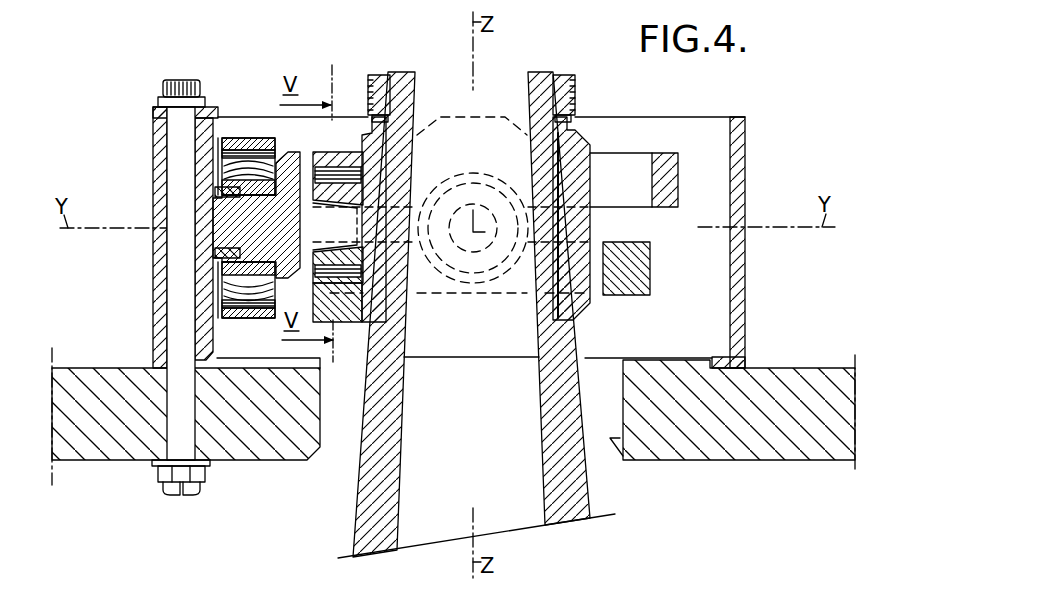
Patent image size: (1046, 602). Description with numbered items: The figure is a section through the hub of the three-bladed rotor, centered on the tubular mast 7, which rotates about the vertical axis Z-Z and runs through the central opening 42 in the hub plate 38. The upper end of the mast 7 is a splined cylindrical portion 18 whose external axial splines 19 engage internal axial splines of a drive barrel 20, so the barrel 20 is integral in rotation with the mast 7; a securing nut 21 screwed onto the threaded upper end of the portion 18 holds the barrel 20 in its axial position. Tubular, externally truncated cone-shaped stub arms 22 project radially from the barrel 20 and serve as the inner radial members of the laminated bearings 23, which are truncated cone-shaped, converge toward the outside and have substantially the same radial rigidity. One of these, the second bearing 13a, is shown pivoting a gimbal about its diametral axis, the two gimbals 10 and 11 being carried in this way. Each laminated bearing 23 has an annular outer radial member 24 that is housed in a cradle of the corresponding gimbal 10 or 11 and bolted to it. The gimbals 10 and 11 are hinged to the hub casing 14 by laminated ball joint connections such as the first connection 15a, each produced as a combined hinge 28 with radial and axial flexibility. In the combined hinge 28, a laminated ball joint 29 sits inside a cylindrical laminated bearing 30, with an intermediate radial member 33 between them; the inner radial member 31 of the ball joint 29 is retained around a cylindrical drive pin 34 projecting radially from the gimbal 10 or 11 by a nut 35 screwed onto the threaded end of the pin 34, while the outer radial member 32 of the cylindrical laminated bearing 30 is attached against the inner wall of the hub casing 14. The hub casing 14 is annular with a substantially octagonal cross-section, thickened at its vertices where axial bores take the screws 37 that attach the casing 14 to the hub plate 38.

The mast 7 is at (368, 527).
The gimbal 10 is at (665, 180).
The gimbal 11 is at (637, 255).
The second bearing 13a is at (349, 289).
The hub casing 14 is at (737, 152).
The first laminated ball joint connection 15a is at (240, 315).
The splined cylindrical portion 18 is at (403, 107).
The external axial splines 19 is at (558, 175).
The drive barrel 20 is at (578, 273).
The securing nut 21 is at (564, 88).
The stub arm 22 is at (336, 185).
The laminated bearing 23 is at (348, 165).
The outer radial member 24 is at (315, 167).
The combined hinge 28 is at (208, 199).
The laminated ball joint 29 is at (230, 170).
The cylindrical laminated bearing 30 is at (222, 168).
The inner radial member 31 is at (220, 263).
The outer radial member 32 is at (245, 140).
The intermediate radial member 33 is at (224, 165).
The drive pin 34 is at (222, 233).
The nut 35 is at (220, 257).
The screw 37 is at (188, 218).
The hub plate 38 is at (717, 440).
The central opening 42 is at (617, 445).